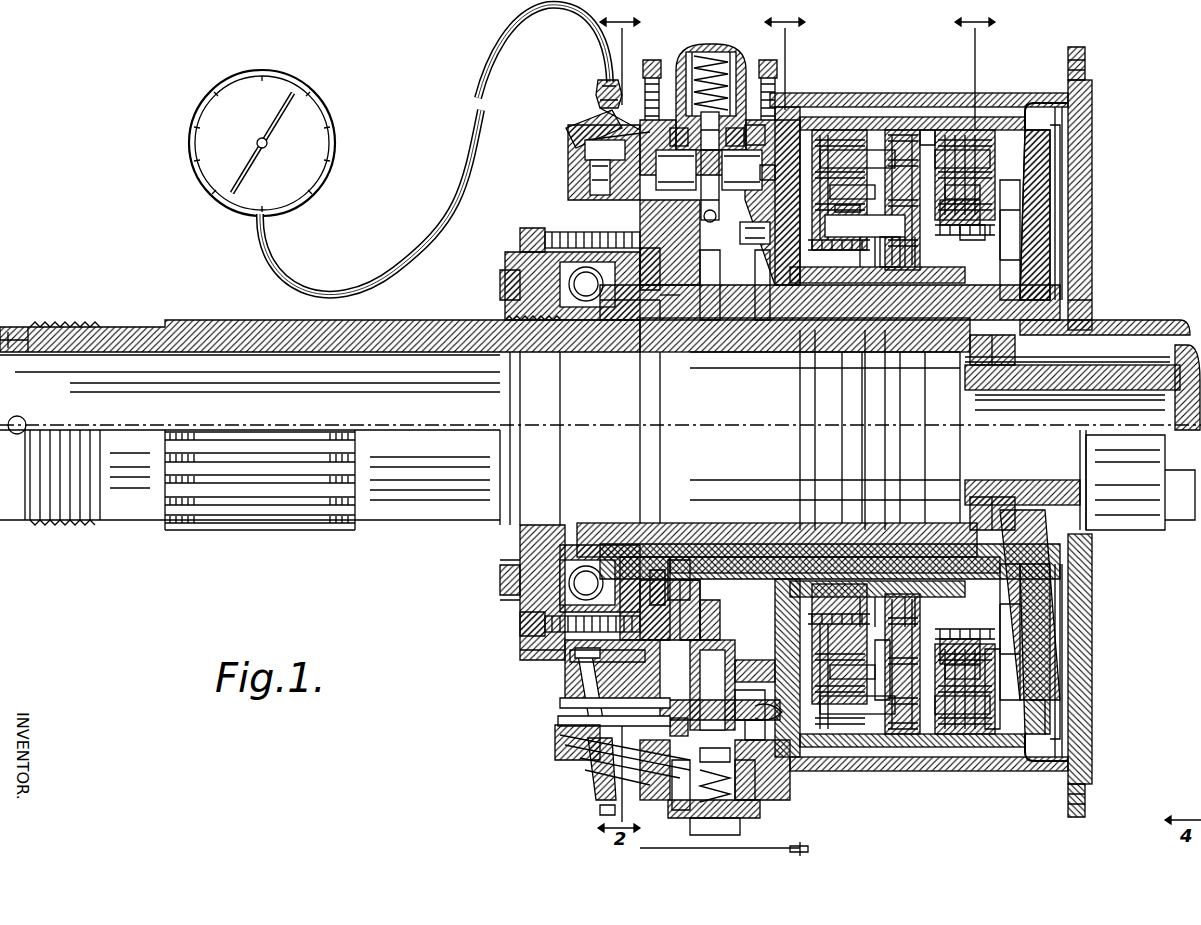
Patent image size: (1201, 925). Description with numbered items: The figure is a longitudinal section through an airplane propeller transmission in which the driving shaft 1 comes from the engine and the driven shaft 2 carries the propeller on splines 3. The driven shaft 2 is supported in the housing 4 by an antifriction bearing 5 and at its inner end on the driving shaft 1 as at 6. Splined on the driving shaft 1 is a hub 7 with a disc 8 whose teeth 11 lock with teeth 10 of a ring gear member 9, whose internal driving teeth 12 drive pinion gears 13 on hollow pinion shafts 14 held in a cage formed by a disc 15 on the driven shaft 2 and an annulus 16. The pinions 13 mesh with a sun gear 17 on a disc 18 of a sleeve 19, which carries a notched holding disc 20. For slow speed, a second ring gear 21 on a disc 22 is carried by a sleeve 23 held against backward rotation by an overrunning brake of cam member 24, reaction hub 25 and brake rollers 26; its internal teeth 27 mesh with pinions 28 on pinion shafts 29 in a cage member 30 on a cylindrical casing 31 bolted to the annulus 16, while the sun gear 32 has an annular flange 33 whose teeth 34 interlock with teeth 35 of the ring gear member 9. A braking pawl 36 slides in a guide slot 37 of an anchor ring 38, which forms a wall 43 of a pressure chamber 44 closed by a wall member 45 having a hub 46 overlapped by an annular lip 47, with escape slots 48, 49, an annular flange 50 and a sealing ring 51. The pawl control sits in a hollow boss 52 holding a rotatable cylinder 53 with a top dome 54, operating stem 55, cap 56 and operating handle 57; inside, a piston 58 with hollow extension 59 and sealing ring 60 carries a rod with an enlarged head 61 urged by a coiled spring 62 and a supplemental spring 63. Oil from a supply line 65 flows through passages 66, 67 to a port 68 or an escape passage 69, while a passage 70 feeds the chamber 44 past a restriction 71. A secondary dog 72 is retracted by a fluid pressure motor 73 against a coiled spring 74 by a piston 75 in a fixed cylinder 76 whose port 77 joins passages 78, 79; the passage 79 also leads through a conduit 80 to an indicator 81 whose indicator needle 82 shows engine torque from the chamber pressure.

The driving shaft 1 is at (1168, 360).
The driven shaft 2 is at (430, 527).
The splines 3 is at (263, 530).
The housing 4 is at (810, 100).
The antifriction bearing 5 is at (515, 296).
The inner end bearing 6 is at (1000, 300).
The hub 7 is at (1110, 340).
The disc 8 is at (1045, 252).
The ring gear member 9 is at (1030, 120).
The teeth 10 is at (1050, 130).
The teeth 11 is at (1040, 715).
The internal driving teeth 12 is at (985, 150).
The pinion gears 13 is at (965, 740).
The pinion shafts 14 is at (945, 155).
The disc 15 is at (1012, 240).
The annulus 16 is at (938, 150).
The sun gear 17 is at (960, 215).
The disc 18 is at (975, 232).
The sleeve 19 is at (885, 335).
The holding disc 20 is at (730, 262).
The ring gear 21 is at (848, 150).
The disc 22 is at (785, 145).
The sleeve 23 is at (800, 320).
The cam member 24 is at (762, 310).
The reaction hub 25 is at (790, 160).
The brake rollers 26 is at (762, 222).
The internal teeth 27 is at (905, 150).
The pinions 28 is at (880, 160).
The pinion shafts 29 is at (840, 150).
The cage member 30 is at (838, 225).
The cylindrical casing 31 is at (890, 240).
The sun gear 32 is at (870, 212).
The annular flange 33 is at (885, 740).
The teeth 34 is at (928, 130).
The teeth 35 is at (878, 774).
The braking pawl 36 is at (752, 694).
The guide slot 37 is at (740, 670).
The anchor ring 38 is at (761, 699).
The wall 43 is at (671, 432).
The pressure chamber 44 is at (660, 275).
The wall member 45 is at (522, 250).
The hub 46 is at (640, 270).
The annular lip 47 is at (690, 560).
The escape slot 48 is at (665, 262).
The escape slot 49 is at (666, 290).
The annular flange 50 is at (620, 150).
The sealing ring 51 is at (600, 172).
The hollow boss 52 is at (770, 790).
The rotatable cylinder 53 is at (650, 790).
The top dome 54 is at (675, 818).
The operating stem 55 is at (700, 835).
The cap 56 is at (730, 830).
The operating handle 57 is at (811, 845).
The piston 58 is at (580, 702).
The hollow extension 59 is at (640, 760).
The sealing ring 60 is at (600, 748).
The enlarged head 61 is at (675, 790).
The coiled spring 62 is at (735, 780).
The supplemental spring 63 is at (760, 790).
The supply line 65 is at (600, 808).
The passage 66 is at (578, 672).
The passage 67 is at (575, 734).
The port 68 is at (600, 762).
The escape passage 69 is at (770, 715).
The passage 70 is at (570, 655).
The restriction 71 is at (558, 721).
The secondary dog 72 is at (740, 168).
The fluid pressure motor 73 is at (735, 82).
The coiled spring 74 is at (722, 56).
The piston 75 is at (668, 128).
The cylinder 76 is at (770, 88).
The port 77 is at (648, 120).
The passage 78 is at (602, 106).
The passage 79 is at (590, 128).
The conduit 80 is at (458, 165).
The indicator 81 is at (322, 132).
The indicator needle 82 is at (288, 92).